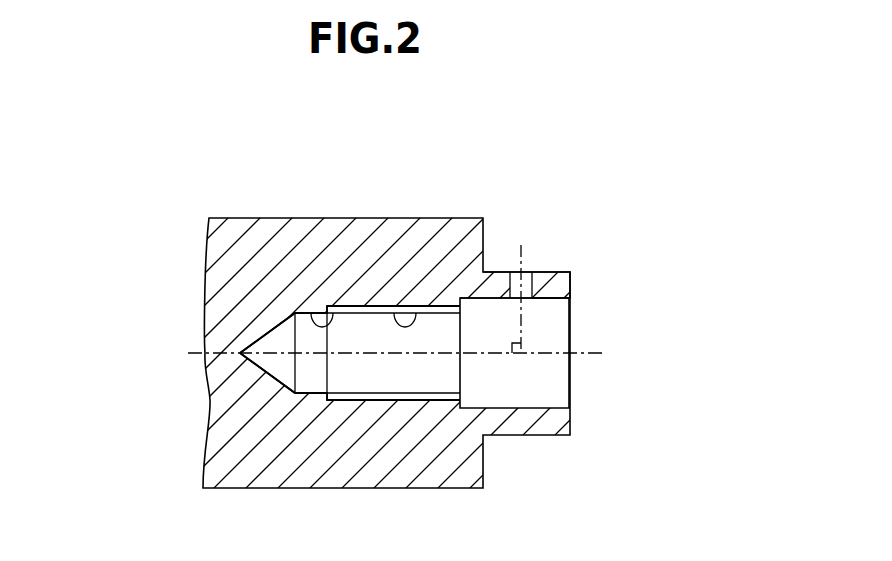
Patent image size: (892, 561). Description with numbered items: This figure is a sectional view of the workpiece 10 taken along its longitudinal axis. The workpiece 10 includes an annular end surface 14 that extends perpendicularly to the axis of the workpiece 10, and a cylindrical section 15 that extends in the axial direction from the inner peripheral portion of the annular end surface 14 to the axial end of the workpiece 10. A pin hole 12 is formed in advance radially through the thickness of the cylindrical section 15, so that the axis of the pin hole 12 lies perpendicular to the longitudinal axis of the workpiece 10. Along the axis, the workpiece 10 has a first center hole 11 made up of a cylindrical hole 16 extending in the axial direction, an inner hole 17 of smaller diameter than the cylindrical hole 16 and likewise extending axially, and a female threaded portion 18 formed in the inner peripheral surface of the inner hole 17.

The workpiece 10 is at (202, 196).
The first center hole 11 is at (570, 377).
The pin hole 12 is at (529, 273).
The annular end surface 14 is at (487, 456).
The cylindrical section 15 is at (563, 272).
The cylindrical hole 16 is at (548, 299).
The inner hole 17 is at (333, 302).
The female threaded portion 18 is at (409, 298).